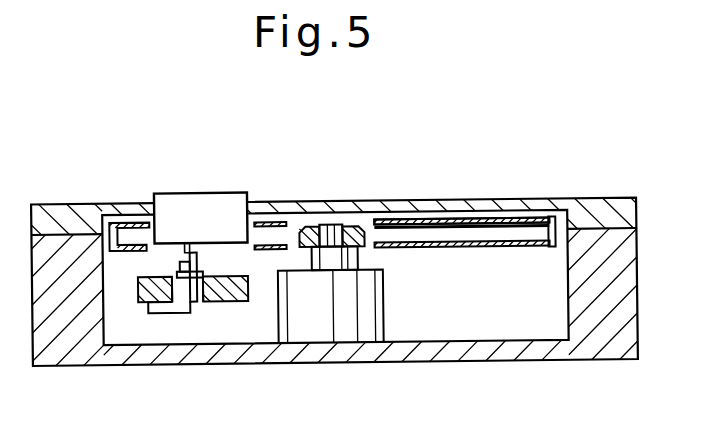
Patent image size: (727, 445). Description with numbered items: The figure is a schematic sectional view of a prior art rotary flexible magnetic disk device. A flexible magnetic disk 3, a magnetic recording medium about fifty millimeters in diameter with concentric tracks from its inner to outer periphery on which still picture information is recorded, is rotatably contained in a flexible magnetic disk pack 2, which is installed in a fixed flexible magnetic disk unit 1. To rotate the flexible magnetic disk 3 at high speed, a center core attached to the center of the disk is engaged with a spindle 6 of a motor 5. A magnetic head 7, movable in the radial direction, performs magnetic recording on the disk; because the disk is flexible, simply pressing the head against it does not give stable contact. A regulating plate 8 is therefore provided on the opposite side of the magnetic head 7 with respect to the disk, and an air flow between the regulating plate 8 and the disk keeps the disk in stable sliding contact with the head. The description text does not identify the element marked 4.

The fixed flexible magnetic disk unit 1 is at (637, 278).
The flexible magnetic disk pack 2 is at (475, 221).
The flexible magnetic disk 3 is at (437, 225).
The bearing 4 is at (348, 226).
The motor 5 is at (383, 306).
The spindle 6 is at (330, 225).
The magnetic head 7 is at (181, 249).
The regulating plate 8 is at (214, 213).